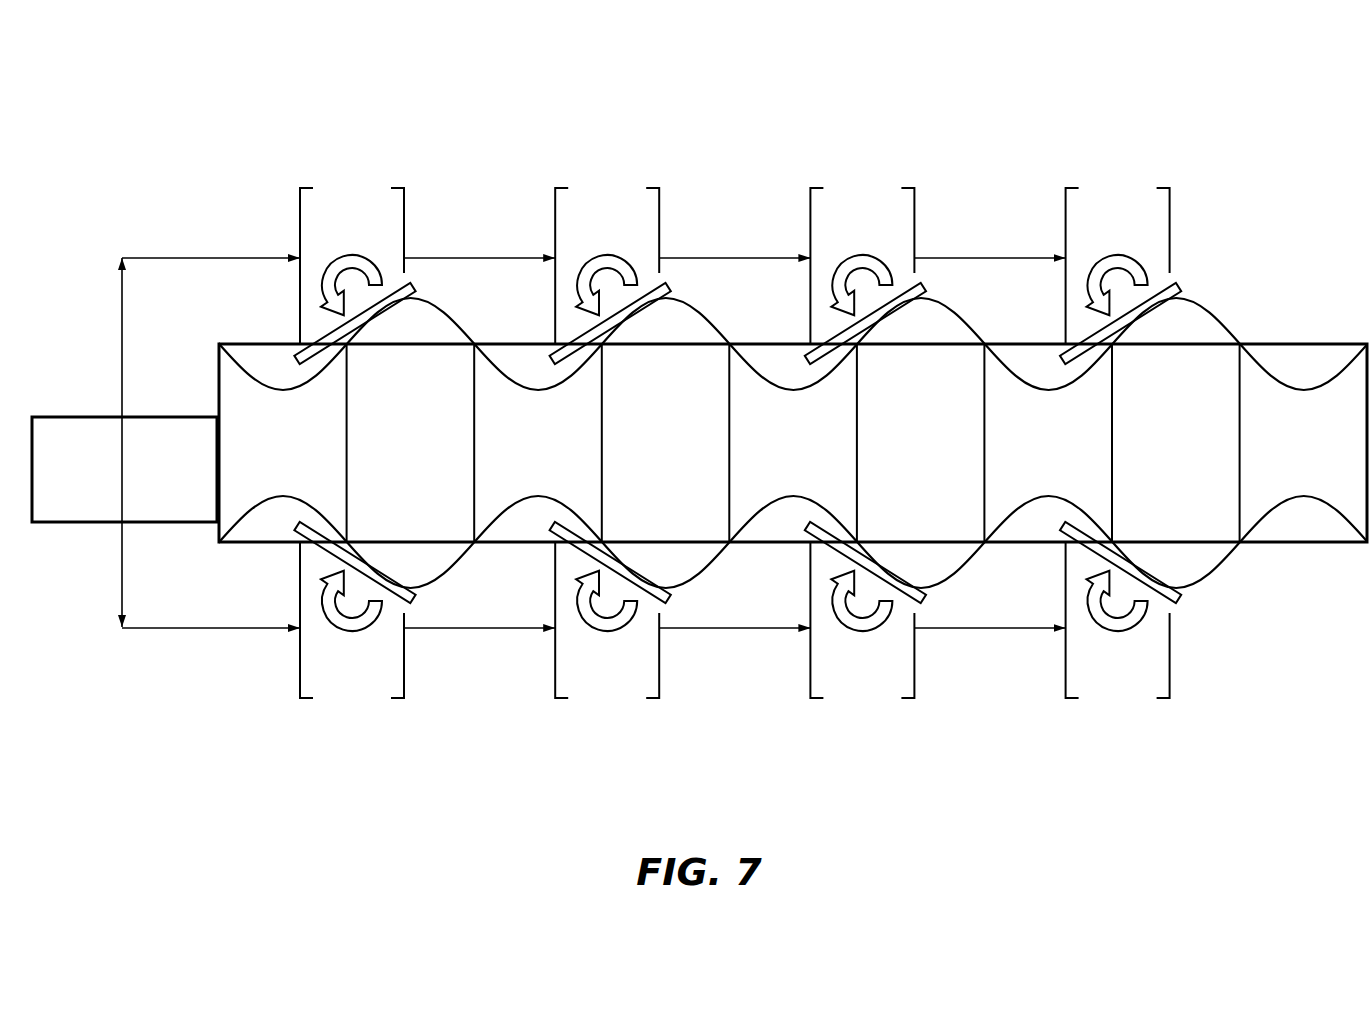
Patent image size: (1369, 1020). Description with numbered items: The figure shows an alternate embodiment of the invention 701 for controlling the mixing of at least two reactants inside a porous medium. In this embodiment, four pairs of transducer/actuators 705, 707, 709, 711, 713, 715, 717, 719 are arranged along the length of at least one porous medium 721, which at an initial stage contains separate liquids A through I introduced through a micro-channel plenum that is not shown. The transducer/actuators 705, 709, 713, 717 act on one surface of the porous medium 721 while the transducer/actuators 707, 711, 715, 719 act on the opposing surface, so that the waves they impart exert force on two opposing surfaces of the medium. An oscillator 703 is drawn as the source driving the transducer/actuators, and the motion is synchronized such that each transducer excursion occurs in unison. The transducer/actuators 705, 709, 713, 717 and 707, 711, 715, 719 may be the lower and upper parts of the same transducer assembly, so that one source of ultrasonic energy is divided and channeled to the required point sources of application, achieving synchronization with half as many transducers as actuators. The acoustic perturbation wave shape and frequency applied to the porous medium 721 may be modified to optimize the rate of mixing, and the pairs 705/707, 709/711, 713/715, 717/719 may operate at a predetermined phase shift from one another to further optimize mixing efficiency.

The alternate embodiment of the invention 701 is at (232, 143).
The oscillator 703 is at (103, 503).
The transducer/actuator 705 is at (330, 227).
The transducer/actuator 707 is at (380, 645).
The transducer/actuator 709 is at (585, 227).
The transducer/actuator 711 is at (585, 682).
The transducer/actuator 713 is at (890, 240).
The transducer/actuator 715 is at (890, 645).
The transducer/actuator 717 is at (1146, 240).
The transducer/actuator 719 is at (1140, 682).
The porous medium 721 is at (220, 725).